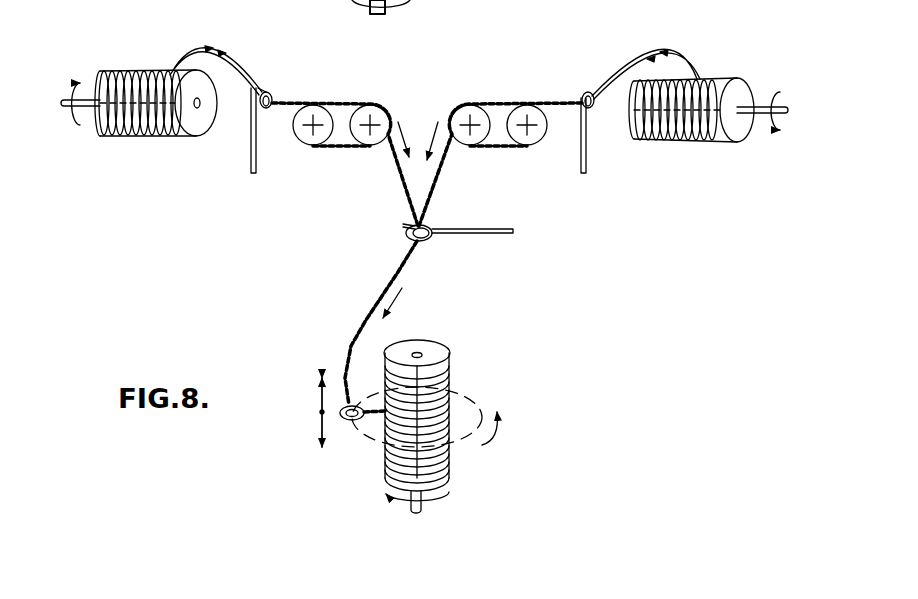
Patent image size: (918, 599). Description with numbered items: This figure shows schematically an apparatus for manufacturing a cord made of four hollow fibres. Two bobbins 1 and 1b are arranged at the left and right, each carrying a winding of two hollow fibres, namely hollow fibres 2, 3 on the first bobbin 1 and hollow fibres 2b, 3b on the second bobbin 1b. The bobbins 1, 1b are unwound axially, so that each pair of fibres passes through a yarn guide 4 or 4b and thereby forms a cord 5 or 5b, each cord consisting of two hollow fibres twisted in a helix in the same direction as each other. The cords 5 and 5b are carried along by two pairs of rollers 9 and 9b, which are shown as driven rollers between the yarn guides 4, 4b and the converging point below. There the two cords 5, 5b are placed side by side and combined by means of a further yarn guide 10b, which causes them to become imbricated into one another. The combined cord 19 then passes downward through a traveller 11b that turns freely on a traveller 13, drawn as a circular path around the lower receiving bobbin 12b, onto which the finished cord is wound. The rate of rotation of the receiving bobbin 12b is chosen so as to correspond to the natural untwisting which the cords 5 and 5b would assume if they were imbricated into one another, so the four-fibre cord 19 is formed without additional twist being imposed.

The bobbin 1 is at (727, 71).
The bobbin 1b is at (134, 140).
The hollow fibre 2 is at (693, 60).
The hollow fibre 2b is at (184, 55).
The hollow fibre 3 is at (622, 75).
The hollow fibre 3b is at (243, 66).
The yarn guide 4 is at (589, 152).
The yarn guide 4b is at (248, 155).
The cord 5 is at (435, 178).
The cord 5b is at (402, 182).
The pair of rollers 9 is at (534, 146).
The pair of rollers 9b is at (306, 144).
The yarn guide 10b is at (479, 235).
The traveller 11b is at (349, 419).
The receiving bobbin 12b is at (452, 462).
The traveller 13 is at (481, 403).
The cord 19 is at (356, 335).